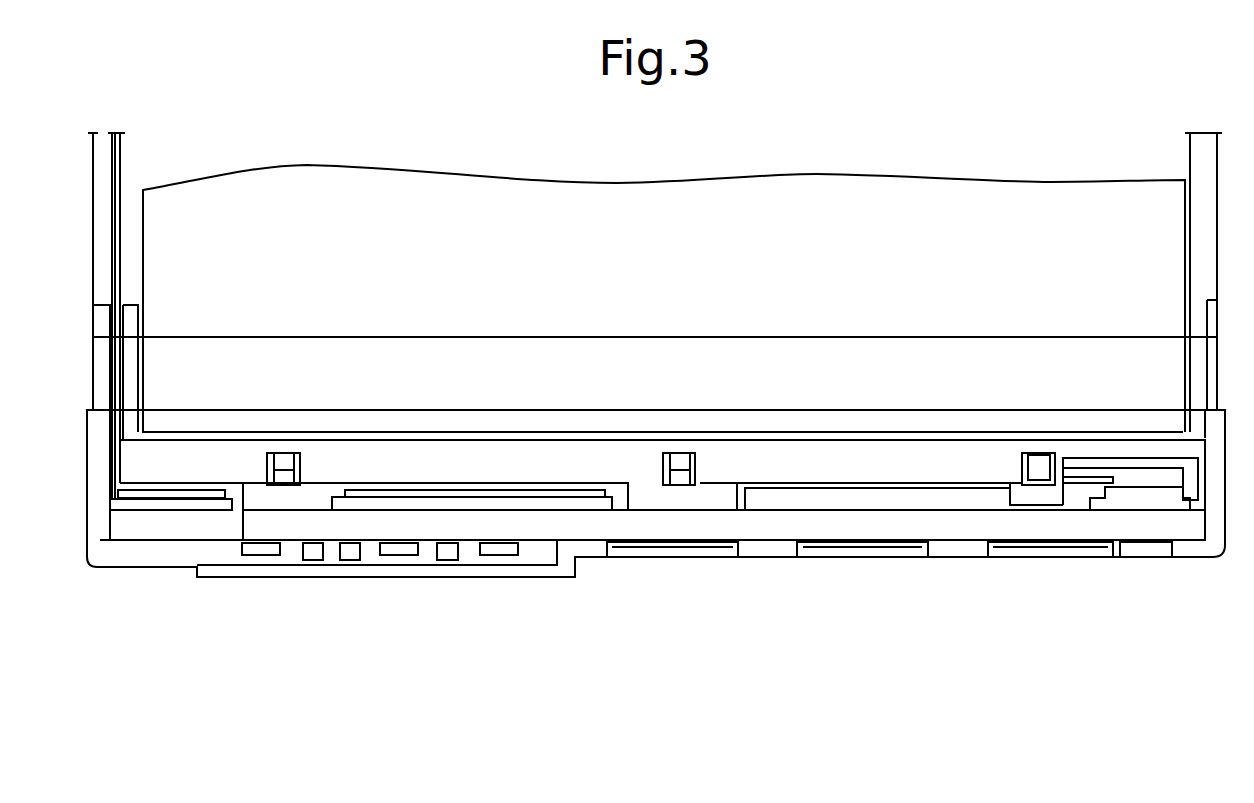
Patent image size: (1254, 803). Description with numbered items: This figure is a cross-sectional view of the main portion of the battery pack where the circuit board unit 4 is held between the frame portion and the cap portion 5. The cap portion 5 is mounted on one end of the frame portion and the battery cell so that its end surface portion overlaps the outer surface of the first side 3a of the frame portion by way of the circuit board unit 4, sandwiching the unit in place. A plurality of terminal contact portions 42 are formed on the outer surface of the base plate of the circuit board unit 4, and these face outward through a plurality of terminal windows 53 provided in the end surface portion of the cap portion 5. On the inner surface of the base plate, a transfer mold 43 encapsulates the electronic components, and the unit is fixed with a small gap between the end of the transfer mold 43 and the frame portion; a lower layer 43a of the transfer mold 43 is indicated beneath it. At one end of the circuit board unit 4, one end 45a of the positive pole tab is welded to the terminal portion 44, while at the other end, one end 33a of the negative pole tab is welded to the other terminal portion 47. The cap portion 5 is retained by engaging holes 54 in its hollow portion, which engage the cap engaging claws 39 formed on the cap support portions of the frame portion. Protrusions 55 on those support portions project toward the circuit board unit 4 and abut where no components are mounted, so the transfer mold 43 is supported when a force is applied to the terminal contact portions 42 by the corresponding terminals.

The first side 3a is at (937, 458).
The circuit board unit 4 is at (768, 532).
The cap portion 5 is at (576, 573).
The one end of negative pole tab 33a is at (183, 495).
The cap engaging claw 39 is at (678, 455).
The terminal contact portion 42 is at (680, 560).
The transfer mold 43 is at (977, 498).
The lower layer of plate member 43a is at (955, 512).
The terminal portion 44 is at (1120, 503).
The one end of positive pole tab 45a is at (1160, 492).
The other terminal portion 47 is at (132, 503).
The terminal window 53 is at (730, 560).
The engaging hole 54 is at (708, 455).
The protrusion 55 is at (718, 455).